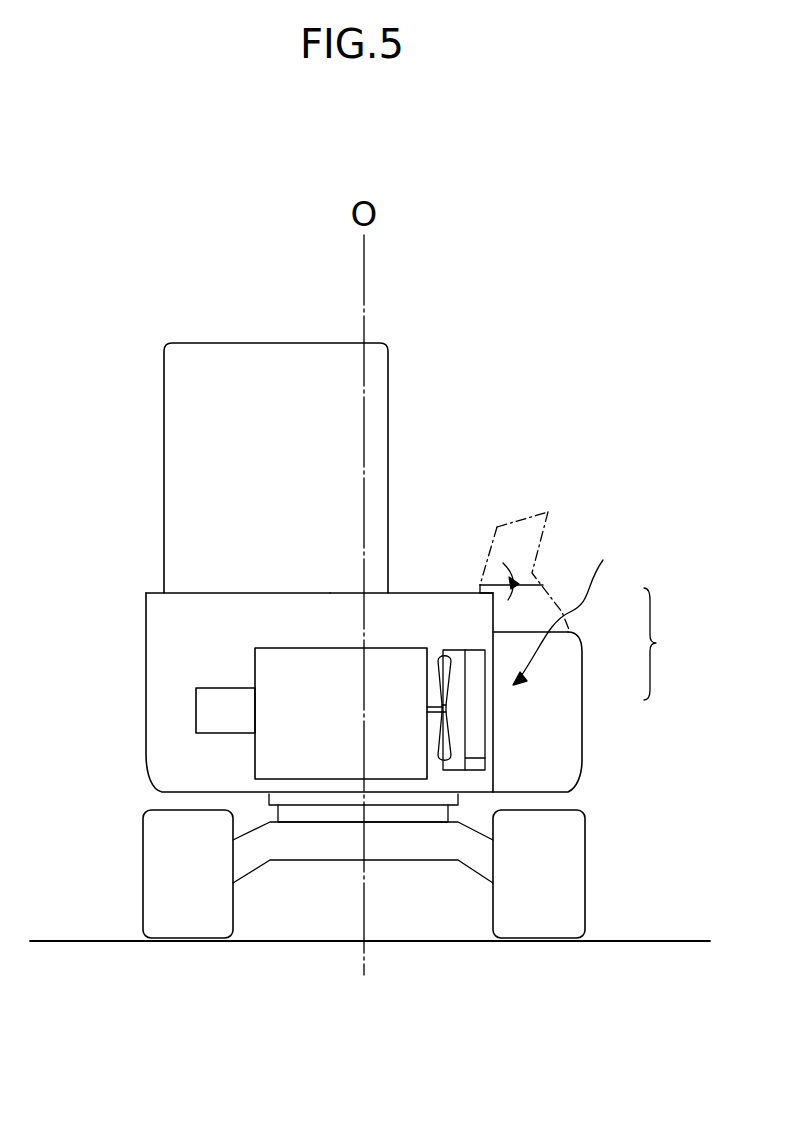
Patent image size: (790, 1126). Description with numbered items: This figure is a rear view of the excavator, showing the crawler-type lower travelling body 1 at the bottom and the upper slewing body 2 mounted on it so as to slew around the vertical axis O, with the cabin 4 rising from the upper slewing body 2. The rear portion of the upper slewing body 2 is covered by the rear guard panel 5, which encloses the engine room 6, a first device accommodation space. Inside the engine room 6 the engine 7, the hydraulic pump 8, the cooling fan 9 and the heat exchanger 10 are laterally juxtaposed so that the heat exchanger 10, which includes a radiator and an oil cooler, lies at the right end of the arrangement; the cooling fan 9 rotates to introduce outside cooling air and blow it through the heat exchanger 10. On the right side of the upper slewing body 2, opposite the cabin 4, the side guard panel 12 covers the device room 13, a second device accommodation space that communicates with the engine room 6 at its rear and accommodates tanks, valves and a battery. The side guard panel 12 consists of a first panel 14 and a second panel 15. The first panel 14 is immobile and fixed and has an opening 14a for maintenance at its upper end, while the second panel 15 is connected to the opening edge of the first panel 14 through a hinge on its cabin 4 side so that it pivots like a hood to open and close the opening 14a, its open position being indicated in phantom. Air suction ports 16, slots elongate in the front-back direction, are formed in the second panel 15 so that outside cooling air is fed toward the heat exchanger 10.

The lower travelling body 1 is at (586, 882).
The upper slewing body 2 is at (400, 378).
The cabin 4 is at (186, 447).
The rear guard panel 5 is at (333, 606).
The engine room 6 is at (262, 607).
The engine 7 is at (382, 773).
The hydraulic pump 8 is at (216, 688).
The cooling fan 9 is at (438, 760).
The heat exchanger 10 is at (478, 640).
The side guard panel 12 is at (670, 644).
The device room 13 is at (570, 707).
The first panel 14 is at (583, 674).
The opening 14a is at (533, 634).
The second panel 15 is at (506, 517).
The air suction ports 16 is at (574, 606).